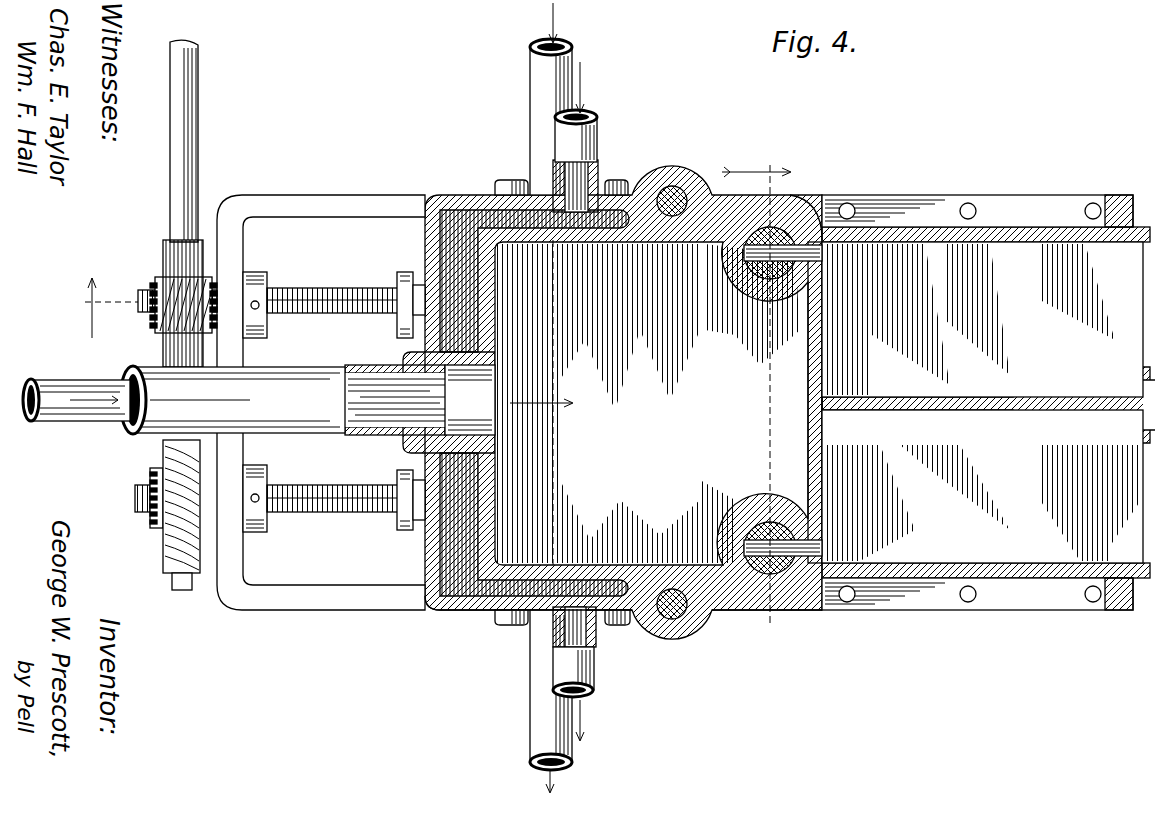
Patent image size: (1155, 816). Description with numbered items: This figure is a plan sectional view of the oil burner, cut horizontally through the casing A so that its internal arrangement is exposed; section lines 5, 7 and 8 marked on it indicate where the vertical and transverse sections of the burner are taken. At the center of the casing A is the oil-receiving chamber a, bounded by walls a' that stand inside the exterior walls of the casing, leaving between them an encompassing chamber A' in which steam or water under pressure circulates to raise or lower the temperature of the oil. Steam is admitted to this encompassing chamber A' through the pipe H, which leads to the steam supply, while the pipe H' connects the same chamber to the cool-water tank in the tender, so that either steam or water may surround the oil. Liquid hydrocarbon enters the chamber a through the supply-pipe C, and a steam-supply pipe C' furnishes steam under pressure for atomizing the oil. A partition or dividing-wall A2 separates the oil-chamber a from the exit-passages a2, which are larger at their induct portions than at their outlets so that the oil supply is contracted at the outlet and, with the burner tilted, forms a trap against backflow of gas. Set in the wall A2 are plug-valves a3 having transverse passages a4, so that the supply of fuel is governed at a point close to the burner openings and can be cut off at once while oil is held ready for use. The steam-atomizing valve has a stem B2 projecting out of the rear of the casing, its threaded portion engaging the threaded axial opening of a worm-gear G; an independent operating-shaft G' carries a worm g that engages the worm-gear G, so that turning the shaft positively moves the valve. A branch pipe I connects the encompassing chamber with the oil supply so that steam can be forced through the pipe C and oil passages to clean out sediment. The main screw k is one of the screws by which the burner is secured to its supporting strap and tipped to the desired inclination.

The casing A is at (779, 396).
The encompassing chamber A' is at (623, 622).
The partition or dividing-wall A2 is at (817, 370).
The central oil-receiving chamber a is at (648, 403).
The walls of the oil-chamber a' is at (534, 403).
The exit-passages a2 is at (982, 402).
The plug-valves a3 is at (769, 522).
The transverse passages a4 is at (748, 548).
The main screw k is at (692, 180).
The supply-pipe C is at (307, 400).
The steam-supply pipe C' is at (524, 398).
The steam pipe H is at (567, 137).
The water pipe H' is at (570, 674).
The branch pipe I is at (90, 421).
The worm-gear G is at (156, 414).
The operating-shaft G' is at (208, 141).
The worm g is at (132, 533).
The valve stem B2 is at (343, 523).
The section line 5 is at (99, 308).
The section line 7 is at (541, 402).
The section line 8 is at (756, 384).